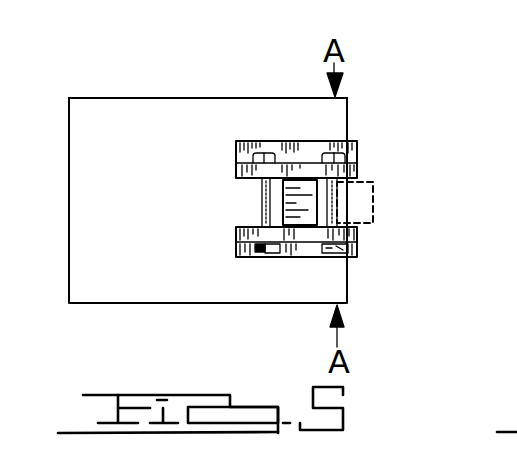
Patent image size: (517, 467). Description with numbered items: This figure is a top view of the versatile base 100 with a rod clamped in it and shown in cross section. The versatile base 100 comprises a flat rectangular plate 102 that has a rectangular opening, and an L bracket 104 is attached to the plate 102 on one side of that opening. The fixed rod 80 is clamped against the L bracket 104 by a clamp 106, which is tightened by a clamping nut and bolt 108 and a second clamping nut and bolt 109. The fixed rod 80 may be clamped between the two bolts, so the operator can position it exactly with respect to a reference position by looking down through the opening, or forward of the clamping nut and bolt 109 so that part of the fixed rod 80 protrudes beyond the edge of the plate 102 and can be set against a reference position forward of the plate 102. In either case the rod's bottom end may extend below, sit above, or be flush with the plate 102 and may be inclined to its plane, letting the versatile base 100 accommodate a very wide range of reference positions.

The versatile base 100 is at (147, 305).
The flat rectangular plate 102 is at (165, 122).
The L bracket 104 is at (237, 166).
The fixed rod 80 is at (283, 197).
The clamp 106 is at (237, 233).
The clamping nut and bolt 108 is at (262, 258).
The clamping nut and bolt 109 is at (328, 258).